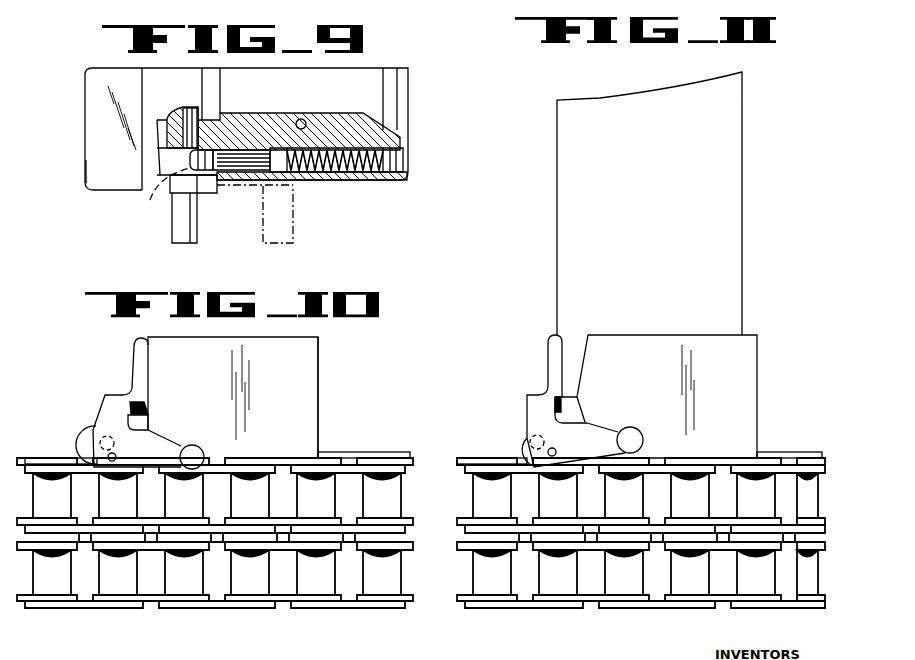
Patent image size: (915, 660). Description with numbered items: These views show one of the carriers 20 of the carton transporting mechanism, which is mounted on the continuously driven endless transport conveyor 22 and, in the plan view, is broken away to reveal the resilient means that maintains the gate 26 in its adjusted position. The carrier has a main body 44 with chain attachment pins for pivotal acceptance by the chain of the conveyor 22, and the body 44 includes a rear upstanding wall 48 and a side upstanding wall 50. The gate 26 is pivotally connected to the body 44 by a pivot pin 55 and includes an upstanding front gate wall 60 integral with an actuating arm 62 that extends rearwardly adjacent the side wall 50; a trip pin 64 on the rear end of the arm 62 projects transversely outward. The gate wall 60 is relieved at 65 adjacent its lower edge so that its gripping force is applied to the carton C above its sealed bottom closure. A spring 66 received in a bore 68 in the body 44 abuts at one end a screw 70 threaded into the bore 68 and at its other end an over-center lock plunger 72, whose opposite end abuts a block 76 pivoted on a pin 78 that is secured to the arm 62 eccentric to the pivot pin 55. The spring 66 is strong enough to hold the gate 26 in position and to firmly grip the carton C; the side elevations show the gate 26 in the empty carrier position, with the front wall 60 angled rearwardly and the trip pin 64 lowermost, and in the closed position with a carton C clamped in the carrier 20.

In FIG. 9, the carrier 20 is at (410, 101).
In FIG. 10, the carrier 20 is at (322, 353).
In FIG. 11, the carrier 20 is at (758, 335).
In FIG. 10, the transport conveyor 22 is at (335, 458).
In FIG. 11, the transport conveyor 22 is at (767, 458).
In FIG. 9, the gate 26 is at (86, 168).
In FIG. 10, the gate 26 is at (134, 347).
In FIG. 11, the gate 26 is at (548, 347).
In FIG. 9, the main body 44 is at (408, 120).
In FIG. 10, the main body 44 is at (310, 388).
In FIG. 11, the main body 44 is at (748, 355).
In FIG. 9, the rear upstanding wall 48 is at (400, 72).
In FIG. 10, the side upstanding wall 50 is at (300, 375).
In FIG. 11, the side upstanding wall 50 is at (742, 391).
In FIG. 10, the pivot pin 55 is at (97, 439).
In FIG. 11, the pivot pin 55 is at (530, 439).
In FIG. 9, the gate wall 60 is at (85, 104).
In FIG. 10, the gate wall 60 is at (132, 369).
In FIG. 11, the gate wall 60 is at (548, 369).
In FIG. 9, the actuating arm 62 is at (204, 190).
In FIG. 10, the actuating arm 62 is at (153, 443).
In FIG. 11, the actuating arm 62 is at (600, 427).
In FIG. 9, the trip pin 64 is at (284, 244).
In FIG. 10, the trip pin 64 is at (204, 458).
In FIG. 11, the trip pin 64 is at (643, 441).
In FIG. 10, the relief 65 is at (142, 411).
In FIG. 11, the relief 65 is at (563, 398).
In FIG. 9, the spring 66 is at (360, 170).
In FIG. 9, the bore 68 is at (332, 173).
In FIG. 9, the screw 70 is at (410, 153).
In FIG. 9, the over-center lock plunger 72 is at (250, 150).
In FIG. 9, the block 76 is at (201, 150).
In FIG. 9, the pin 78 is at (152, 198).
In FIG. 10, the pin 78 is at (113, 461).
In FIG. 11, the pin 78 is at (553, 456).
In FIG. 11, the carton C is at (742, 97).